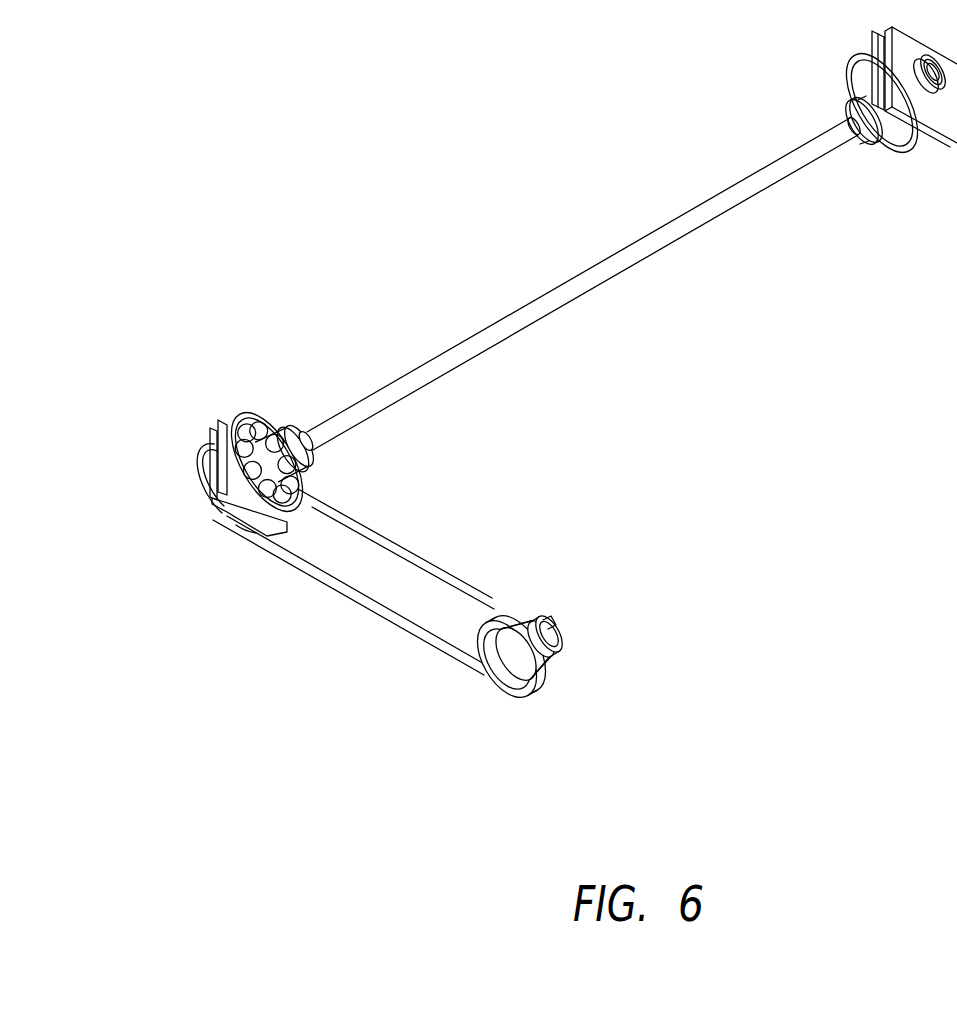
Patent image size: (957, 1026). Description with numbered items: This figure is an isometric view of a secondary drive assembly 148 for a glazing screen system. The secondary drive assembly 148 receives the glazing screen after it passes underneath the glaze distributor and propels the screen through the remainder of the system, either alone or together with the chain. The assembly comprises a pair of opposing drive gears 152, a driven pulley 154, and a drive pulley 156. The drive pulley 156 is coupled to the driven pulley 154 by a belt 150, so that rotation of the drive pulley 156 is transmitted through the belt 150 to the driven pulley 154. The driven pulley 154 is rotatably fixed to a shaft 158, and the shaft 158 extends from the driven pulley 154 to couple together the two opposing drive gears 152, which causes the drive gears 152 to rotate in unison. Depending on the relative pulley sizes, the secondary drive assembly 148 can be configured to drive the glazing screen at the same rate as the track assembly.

The secondary drive assembly 148 is at (420, 122).
The belt 150 is at (365, 610).
The drive gears 152 is at (272, 417).
The driven pulley 154 is at (190, 470).
The drive pulley 156 is at (492, 678).
The shaft 158 is at (504, 316).